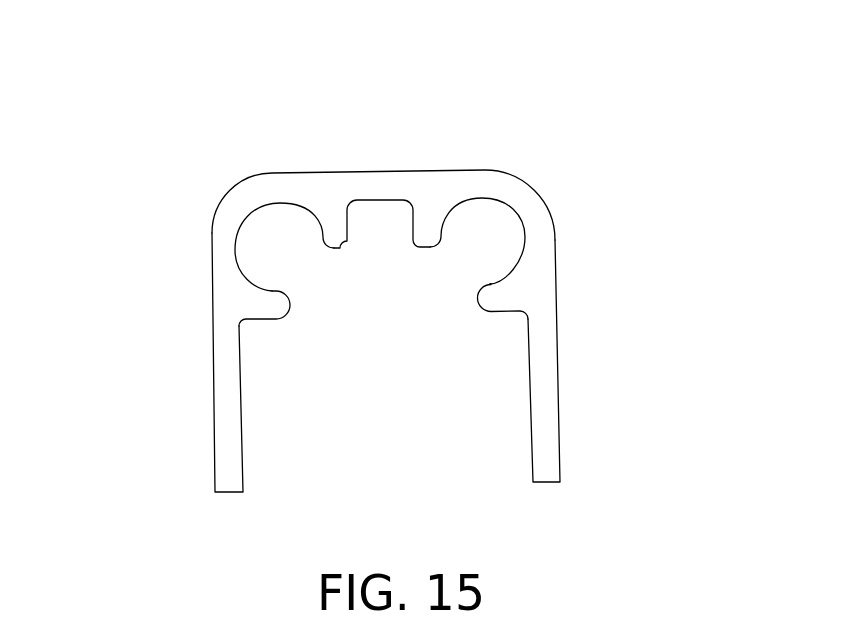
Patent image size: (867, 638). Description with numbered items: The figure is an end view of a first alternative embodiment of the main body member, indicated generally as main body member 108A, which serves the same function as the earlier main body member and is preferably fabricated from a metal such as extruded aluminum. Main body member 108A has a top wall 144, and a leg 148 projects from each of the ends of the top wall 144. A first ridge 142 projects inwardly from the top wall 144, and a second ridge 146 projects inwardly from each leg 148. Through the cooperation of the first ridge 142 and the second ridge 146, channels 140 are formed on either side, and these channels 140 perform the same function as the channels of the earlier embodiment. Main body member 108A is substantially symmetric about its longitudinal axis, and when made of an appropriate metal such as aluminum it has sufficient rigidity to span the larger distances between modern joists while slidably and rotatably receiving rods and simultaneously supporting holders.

The main body member 108A is at (450, 140).
The channels 140 is at (275, 254).
The first ridge 142 is at (427, 240).
The top wall 144 is at (380, 187).
The second ridge 146 is at (267, 312).
The leg 148 is at (232, 378).